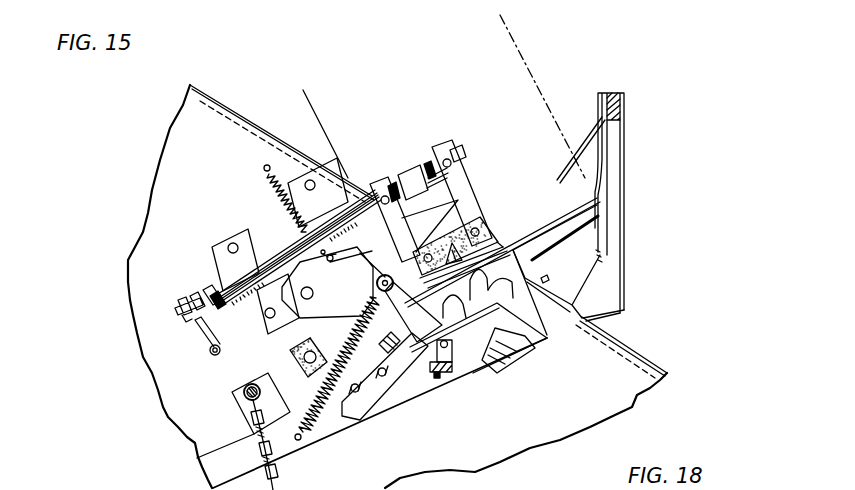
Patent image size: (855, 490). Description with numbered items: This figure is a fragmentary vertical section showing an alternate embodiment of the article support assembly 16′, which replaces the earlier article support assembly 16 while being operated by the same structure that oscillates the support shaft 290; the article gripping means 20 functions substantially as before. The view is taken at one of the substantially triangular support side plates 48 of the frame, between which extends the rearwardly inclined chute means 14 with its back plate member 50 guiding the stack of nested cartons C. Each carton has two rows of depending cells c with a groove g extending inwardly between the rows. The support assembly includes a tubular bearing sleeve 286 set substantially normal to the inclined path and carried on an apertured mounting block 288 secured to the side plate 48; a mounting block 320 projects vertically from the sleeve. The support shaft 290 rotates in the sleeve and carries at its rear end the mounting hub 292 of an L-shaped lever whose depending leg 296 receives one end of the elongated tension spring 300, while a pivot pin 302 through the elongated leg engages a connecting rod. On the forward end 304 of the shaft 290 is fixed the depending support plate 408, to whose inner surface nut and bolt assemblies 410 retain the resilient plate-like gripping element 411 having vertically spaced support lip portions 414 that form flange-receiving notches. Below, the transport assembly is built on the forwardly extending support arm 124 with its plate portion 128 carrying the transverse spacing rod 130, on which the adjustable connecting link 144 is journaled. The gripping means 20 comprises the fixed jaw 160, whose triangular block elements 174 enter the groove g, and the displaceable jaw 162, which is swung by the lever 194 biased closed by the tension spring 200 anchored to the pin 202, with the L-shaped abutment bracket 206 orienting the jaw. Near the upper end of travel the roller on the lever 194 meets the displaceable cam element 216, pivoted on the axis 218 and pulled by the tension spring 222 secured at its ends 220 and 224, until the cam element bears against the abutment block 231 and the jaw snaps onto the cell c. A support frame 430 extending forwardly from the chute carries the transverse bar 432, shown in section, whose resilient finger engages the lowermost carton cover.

The chute means 14 is at (503, 89).
The article support assembly 16 is at (458, 200).
The alternate article support assembly 16' is at (525, 215).
The gripping means 20 is at (532, 352).
The support side plate 48 is at (210, 107).
The back plate member 50 is at (310, 98).
The support arm 124 is at (227, 445).
The plate portion 128 is at (242, 402).
The spacing rod 130 is at (244, 384).
The adjustable connecting link 144 is at (266, 437).
The fixed gripping jaw 160 is at (493, 358).
The displaceable gripping jaw 162 is at (457, 374).
The triangular-shaped block element 174 is at (537, 333).
The lever 194 is at (410, 307).
The tension spring 200 is at (335, 423).
The pin 202 is at (310, 442).
The L-shaped abutment bracket 206 is at (368, 392).
The displaceable cam element 216 is at (365, 285).
The pivot axis 218 is at (315, 293).
The spring end 220 is at (320, 262).
The tension spring 222 is at (270, 182).
The spring end 224 is at (263, 167).
The abutment block 231 is at (293, 353).
The bearing sleeve 286 is at (282, 253).
The mounting block 288 is at (237, 232).
The support shaft 290 is at (215, 302).
The mounting hub 292 is at (187, 300).
The depending leg 296 is at (209, 328).
The tension spring 300 is at (222, 350).
The pivot pin 302 is at (182, 302).
The forward end of shaft 304 is at (460, 152).
The mounting block 320 is at (305, 168).
The depending support plate 408 is at (467, 193).
The nut and bolt assemblies 410 is at (467, 228).
The resilient plate-like gripping element 411 is at (490, 222).
The support lip portions 414 is at (503, 230).
The support frame 430 is at (600, 272).
The transverse bar 432 is at (608, 152).
The carton C is at (543, 257).
The cells c is at (457, 307).
The groove g is at (481, 279).